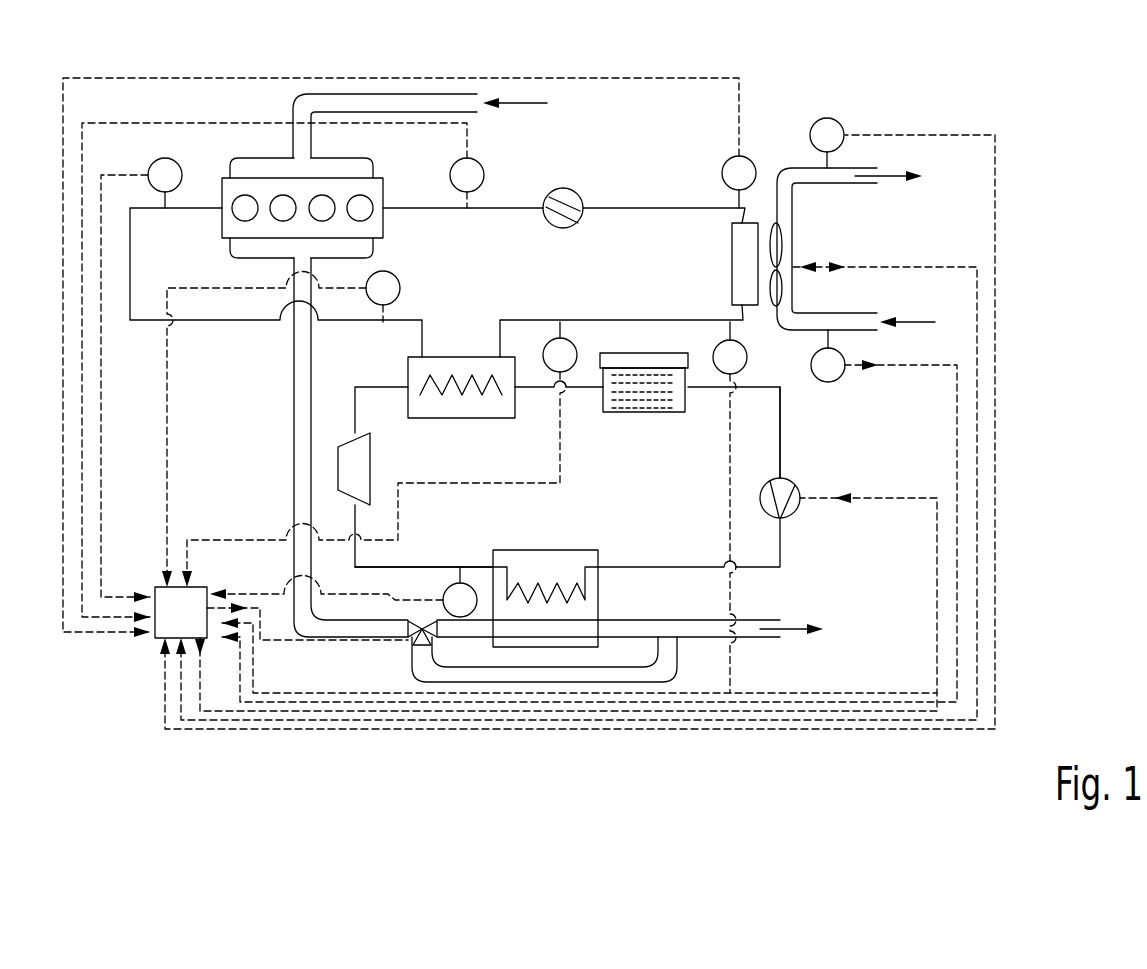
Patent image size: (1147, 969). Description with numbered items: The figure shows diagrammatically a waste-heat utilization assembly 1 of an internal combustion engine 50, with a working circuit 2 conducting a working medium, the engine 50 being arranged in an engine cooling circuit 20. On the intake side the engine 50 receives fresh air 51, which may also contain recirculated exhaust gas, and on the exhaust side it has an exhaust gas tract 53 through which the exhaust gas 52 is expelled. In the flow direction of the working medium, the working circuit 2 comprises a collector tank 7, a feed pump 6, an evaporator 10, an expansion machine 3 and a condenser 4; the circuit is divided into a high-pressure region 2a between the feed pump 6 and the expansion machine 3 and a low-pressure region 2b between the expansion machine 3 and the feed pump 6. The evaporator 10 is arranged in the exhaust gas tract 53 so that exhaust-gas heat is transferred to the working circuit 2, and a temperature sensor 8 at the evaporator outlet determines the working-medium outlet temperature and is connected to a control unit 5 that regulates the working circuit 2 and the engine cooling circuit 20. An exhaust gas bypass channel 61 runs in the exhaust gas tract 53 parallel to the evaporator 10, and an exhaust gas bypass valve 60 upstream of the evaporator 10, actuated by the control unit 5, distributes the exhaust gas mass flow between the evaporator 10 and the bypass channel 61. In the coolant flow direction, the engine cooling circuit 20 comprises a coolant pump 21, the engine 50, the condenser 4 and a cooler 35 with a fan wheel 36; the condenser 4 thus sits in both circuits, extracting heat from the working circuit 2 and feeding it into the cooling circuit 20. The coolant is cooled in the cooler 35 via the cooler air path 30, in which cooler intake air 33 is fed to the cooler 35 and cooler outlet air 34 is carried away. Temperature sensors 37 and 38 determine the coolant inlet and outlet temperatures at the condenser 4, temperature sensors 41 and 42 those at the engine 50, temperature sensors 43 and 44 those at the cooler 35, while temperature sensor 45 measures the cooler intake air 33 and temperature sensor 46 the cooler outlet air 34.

The waste-heat utilization assembly 1 is at (980, 98).
The working circuit 2 is at (842, 546).
The high-pressure region 2a is at (423, 567).
The low-pressure region 2b is at (780, 418).
The expansion machine 3 is at (370, 452).
The condenser 4 is at (472, 357).
The control unit 5 is at (155, 590).
The feed pump 6 is at (795, 482).
The collector tank 7 is at (645, 413).
The temperature sensor 8 is at (470, 583).
The evaporator 10 is at (550, 560).
The engine cooling circuit 20 is at (660, 192).
The coolant pump 21 is at (563, 228).
The cooler air path 30 is at (838, 207).
The cooler intake air 33 is at (914, 320).
The cooler outlet air 34 is at (891, 168).
The cooler 35 is at (732, 258).
The fan wheel 36 is at (783, 237).
The temperature sensor 37 is at (400, 280).
The temperature sensor 38 is at (576, 346).
The temperature sensor 41 is at (485, 175).
The temperature sensor 42 is at (180, 166).
The temperature sensor 43 is at (716, 345).
The temperature sensor 44 is at (751, 161).
The temperature sensor 45 is at (840, 378).
The temperature sensor 46 is at (827, 118).
The internal combustion engine 50 is at (385, 180).
The fresh air 51 is at (523, 103).
The exhaust gas 52 is at (785, 627).
The exhaust gas tract 53 is at (294, 396).
The exhaust gas bypass valve 60 is at (415, 640).
The exhaust gas bypass channel 61 is at (547, 682).